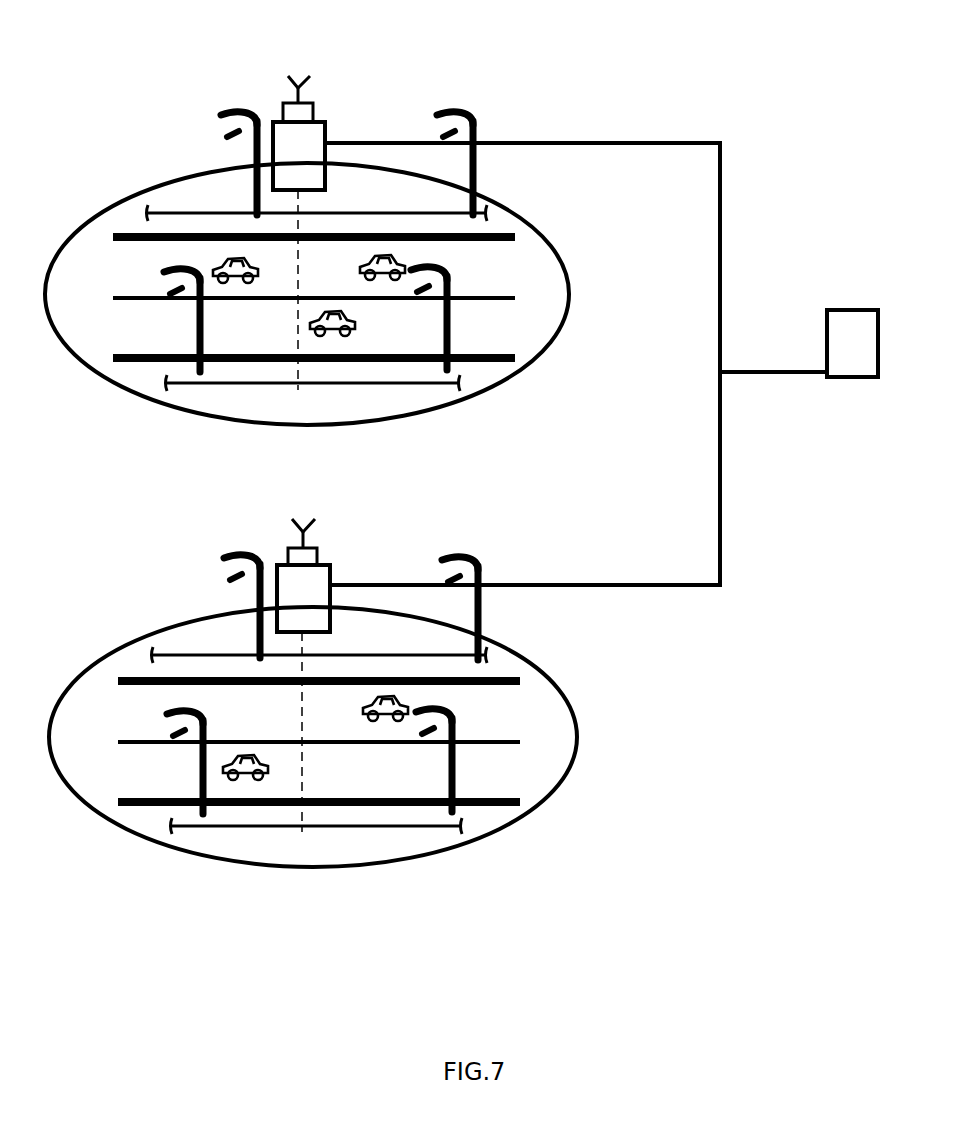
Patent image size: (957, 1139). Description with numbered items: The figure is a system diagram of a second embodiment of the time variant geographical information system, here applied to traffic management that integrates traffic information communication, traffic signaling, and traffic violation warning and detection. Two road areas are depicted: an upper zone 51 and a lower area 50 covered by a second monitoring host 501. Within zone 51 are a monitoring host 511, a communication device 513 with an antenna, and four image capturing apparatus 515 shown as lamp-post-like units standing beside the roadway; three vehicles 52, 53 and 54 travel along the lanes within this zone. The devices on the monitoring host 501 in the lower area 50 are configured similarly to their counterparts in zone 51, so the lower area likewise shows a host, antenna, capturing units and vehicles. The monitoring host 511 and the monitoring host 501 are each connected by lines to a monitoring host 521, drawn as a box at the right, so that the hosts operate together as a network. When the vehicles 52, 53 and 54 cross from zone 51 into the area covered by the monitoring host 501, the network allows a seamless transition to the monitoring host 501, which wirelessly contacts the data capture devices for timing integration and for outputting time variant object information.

The second road section 50 is at (193, 617).
The zone 51 is at (151, 193).
The vehicle 52 is at (360, 263).
The vehicle 53 is at (302, 332).
The vehicle 54 is at (236, 255).
The monitoring host 501 is at (322, 580).
The monitoring host 511 is at (308, 168).
The communication device 513 is at (288, 115).
The image capturing apparatus 515 is at (450, 336).
The monitoring host 521 is at (837, 320).